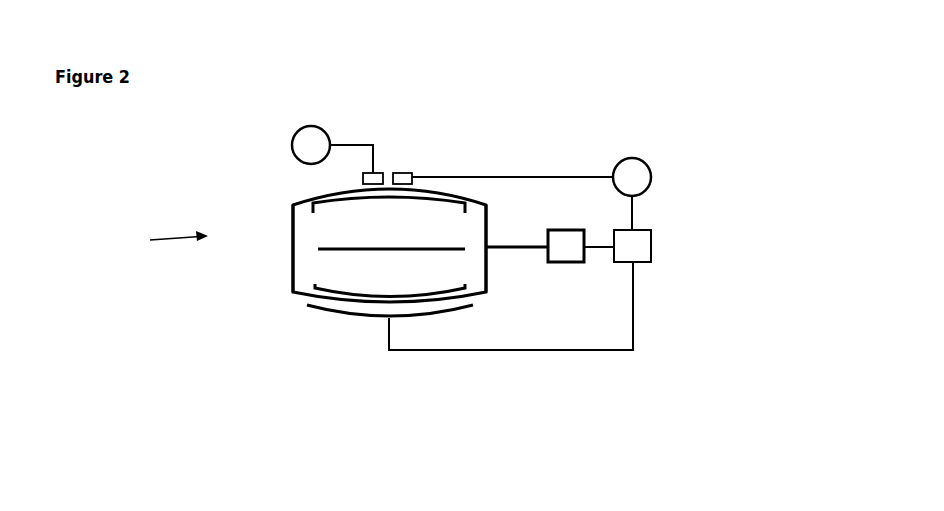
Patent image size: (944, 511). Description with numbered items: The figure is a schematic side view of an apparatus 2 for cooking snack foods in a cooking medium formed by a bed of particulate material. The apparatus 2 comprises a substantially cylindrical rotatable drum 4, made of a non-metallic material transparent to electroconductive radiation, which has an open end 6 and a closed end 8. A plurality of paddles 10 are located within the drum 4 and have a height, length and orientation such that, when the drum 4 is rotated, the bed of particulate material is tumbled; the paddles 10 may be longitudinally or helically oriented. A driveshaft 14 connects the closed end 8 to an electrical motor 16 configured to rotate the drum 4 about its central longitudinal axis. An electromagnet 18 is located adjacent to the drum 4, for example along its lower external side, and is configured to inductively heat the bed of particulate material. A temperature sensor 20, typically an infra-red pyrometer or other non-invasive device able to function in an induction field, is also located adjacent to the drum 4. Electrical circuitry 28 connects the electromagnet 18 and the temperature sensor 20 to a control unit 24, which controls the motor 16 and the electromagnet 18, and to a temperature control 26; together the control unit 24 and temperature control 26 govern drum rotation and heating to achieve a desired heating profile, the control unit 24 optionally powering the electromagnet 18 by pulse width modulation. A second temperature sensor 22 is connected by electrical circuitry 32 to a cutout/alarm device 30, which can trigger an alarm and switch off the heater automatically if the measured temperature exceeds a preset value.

The apparatus 2 is at (162, 241).
The rotatable drum 4 is at (298, 200).
The open end 6 is at (293, 225).
The closed end 8 is at (487, 222).
The paddles 10 is at (316, 212).
The driveshaft 14 is at (523, 240).
The electrical motor 16 is at (566, 252).
The electromagnet 18 is at (355, 318).
The temperature sensor 20 is at (407, 177).
The second temperature sensor 22 is at (377, 177).
The control unit 24 is at (648, 250).
The temperature control 26 is at (635, 173).
The electrical circuitry 28 is at (496, 348).
The cutout/alarm device 30 is at (313, 142).
The electrical circuitry 32 is at (345, 145).